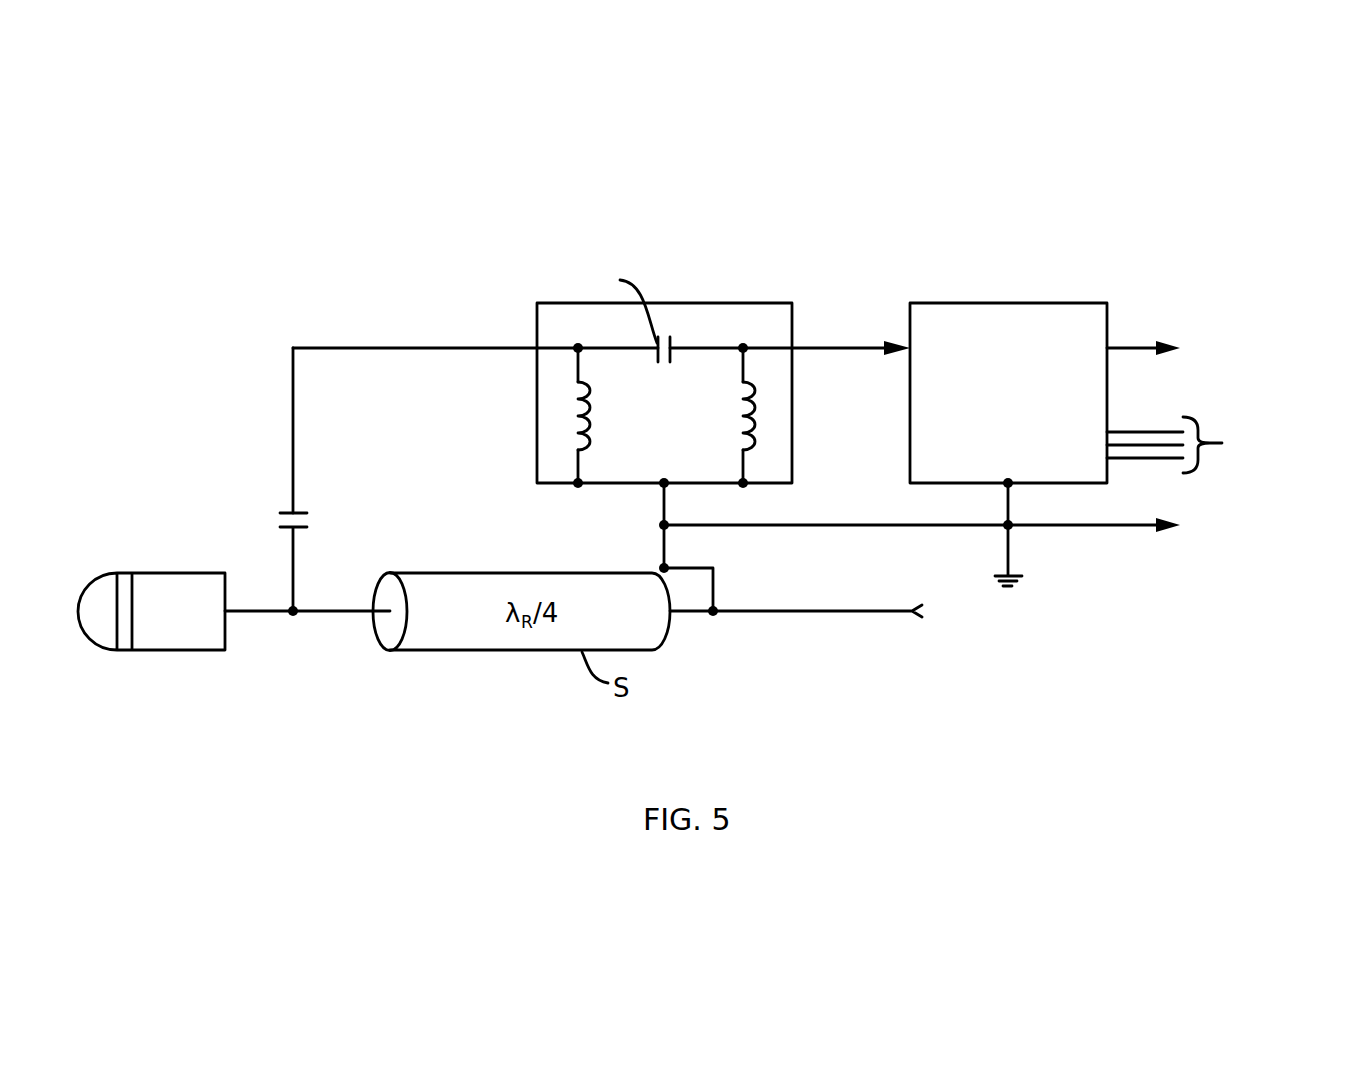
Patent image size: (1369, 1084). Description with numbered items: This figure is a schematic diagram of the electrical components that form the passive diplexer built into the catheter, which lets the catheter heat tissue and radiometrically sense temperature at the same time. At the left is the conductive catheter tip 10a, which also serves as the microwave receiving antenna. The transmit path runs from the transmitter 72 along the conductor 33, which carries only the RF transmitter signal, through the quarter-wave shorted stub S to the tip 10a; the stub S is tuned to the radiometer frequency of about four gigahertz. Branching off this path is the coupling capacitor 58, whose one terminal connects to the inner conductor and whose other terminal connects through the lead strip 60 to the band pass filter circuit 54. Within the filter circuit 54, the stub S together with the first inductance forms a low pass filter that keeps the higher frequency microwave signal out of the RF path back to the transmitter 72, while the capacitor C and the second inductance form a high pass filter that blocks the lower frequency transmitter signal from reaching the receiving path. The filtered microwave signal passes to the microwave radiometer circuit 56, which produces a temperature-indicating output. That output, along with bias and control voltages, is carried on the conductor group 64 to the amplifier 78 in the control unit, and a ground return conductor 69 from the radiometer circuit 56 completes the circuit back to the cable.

The conductive catheter tip 10a is at (103, 572).
The conductor 33 is at (760, 613).
The filter circuit 54 is at (718, 303).
The microwave radiometer circuit 56 is at (978, 303).
The coupling capacitor 58 is at (288, 512).
The lead strip 60 is at (293, 438).
The conductor group 64 is at (1130, 359).
The ground return conductor 69 is at (832, 527).
The transmitter 72 is at (1005, 629).
The amplifier 78 is at (1195, 343).